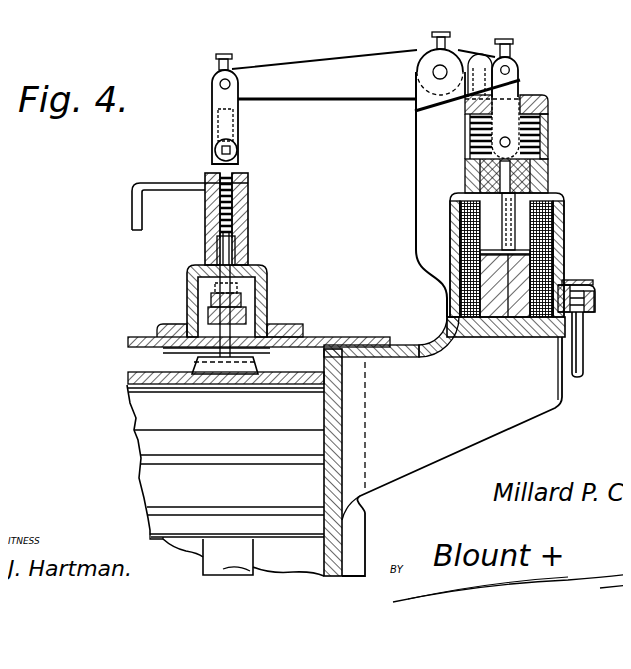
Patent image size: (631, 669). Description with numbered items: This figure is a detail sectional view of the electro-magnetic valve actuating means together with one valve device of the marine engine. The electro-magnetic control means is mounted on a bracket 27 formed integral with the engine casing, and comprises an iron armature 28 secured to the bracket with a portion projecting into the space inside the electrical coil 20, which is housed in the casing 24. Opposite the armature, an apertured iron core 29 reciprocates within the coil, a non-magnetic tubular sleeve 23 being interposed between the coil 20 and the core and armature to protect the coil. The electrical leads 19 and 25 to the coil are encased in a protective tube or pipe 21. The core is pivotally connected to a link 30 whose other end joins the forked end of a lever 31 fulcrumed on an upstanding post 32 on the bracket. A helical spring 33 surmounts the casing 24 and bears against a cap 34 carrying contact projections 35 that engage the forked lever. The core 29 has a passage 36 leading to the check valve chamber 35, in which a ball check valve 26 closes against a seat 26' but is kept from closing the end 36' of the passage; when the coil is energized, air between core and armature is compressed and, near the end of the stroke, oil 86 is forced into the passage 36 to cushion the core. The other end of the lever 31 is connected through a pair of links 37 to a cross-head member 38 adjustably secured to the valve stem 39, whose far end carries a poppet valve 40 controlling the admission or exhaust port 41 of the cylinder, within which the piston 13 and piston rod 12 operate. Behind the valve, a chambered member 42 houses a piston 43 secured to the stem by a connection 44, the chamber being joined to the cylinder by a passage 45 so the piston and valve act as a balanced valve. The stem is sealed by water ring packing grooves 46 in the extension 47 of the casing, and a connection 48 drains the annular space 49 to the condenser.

The piston rod 12 is at (228, 557).
The piston 13 is at (234, 462).
The electrical lead 19 is at (583, 280).
The electrical coil 20 is at (557, 222).
The tube or pipe 21 is at (576, 334).
The tubular sleeve 23 is at (556, 258).
The casing 24 is at (541, 157).
The electrical lead 25 is at (591, 294).
The ball check valve 26 is at (443, 177).
The seat 26' is at (572, 150).
The bracket 27 is at (452, 456).
The iron armature 28 is at (503, 318).
The apertured iron core 29 is at (541, 169).
The link 30 is at (515, 82).
The lever 31 is at (376, 80).
The upstanding post 32 is at (430, 107).
The helical spring 33 is at (530, 125).
The cap 34 is at (542, 98).
The contact projections / check valve chamber 35 is at (560, 83).
The passage 36 is at (444, 282).
The end of the passage 36' is at (580, 198).
The link 37 is at (204, 110).
The cross-head member 38 is at (230, 144).
The valve stem 39 is at (197, 246).
The poppet valve 40 is at (254, 357).
The admission or exhaust port 41 is at (205, 372).
The chambered member 42 is at (260, 276).
The piston 43 is at (179, 285).
The connection 44 is at (202, 338).
The passage 45 is at (262, 320).
The water ring packing grooves 46 is at (200, 204).
The extension 47 is at (240, 182).
The connection 48 is at (124, 200).
The annular space 49 is at (238, 168).
The oil 86 is at (557, 212).